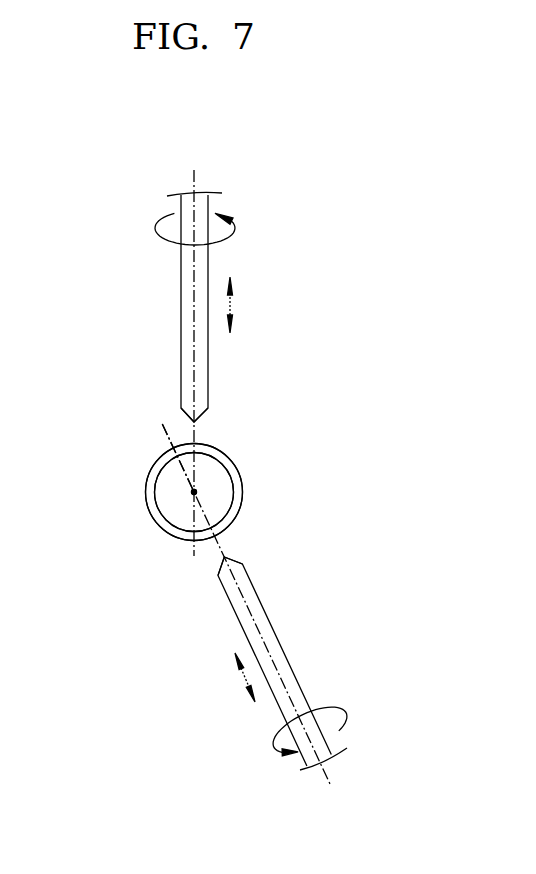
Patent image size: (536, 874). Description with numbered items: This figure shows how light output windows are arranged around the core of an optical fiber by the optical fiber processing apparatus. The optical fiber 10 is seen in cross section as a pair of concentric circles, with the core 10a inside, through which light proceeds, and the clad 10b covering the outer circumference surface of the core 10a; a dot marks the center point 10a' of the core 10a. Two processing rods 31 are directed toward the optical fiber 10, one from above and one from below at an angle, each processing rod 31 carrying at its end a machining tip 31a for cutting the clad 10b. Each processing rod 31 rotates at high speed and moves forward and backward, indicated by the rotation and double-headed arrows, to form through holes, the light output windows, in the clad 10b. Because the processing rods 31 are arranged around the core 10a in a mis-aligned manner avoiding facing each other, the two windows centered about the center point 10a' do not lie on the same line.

The optical fiber 10 is at (138, 463).
The core 10a is at (232, 492).
The center point 10a' is at (136, 484).
The clad 10b is at (230, 455).
The processing rod 31 is at (183, 302).
The machining tip 31a is at (190, 421).